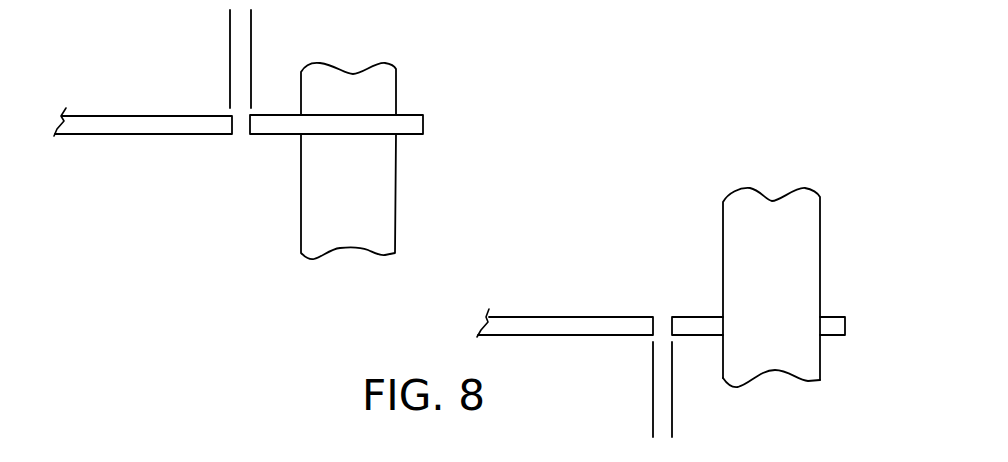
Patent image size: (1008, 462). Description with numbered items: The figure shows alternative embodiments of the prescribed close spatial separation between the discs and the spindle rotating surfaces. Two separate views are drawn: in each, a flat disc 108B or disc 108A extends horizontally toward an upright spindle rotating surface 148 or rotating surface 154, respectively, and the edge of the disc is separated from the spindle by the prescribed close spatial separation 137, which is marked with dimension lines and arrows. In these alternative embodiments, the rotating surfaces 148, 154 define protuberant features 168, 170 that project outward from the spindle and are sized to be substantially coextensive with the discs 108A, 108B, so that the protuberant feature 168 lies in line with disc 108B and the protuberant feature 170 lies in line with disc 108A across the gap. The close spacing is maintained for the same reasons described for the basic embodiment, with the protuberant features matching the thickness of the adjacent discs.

The disc 108A is at (608, 317).
The disc 108B is at (187, 115).
The prescribed close spatial separation 137 is at (167, 25).
The rotating surface 148 is at (303, 183).
The rotating surface 154 is at (723, 215).
The protuberant feature 168 is at (267, 123).
The protuberant feature 170 is at (688, 328).